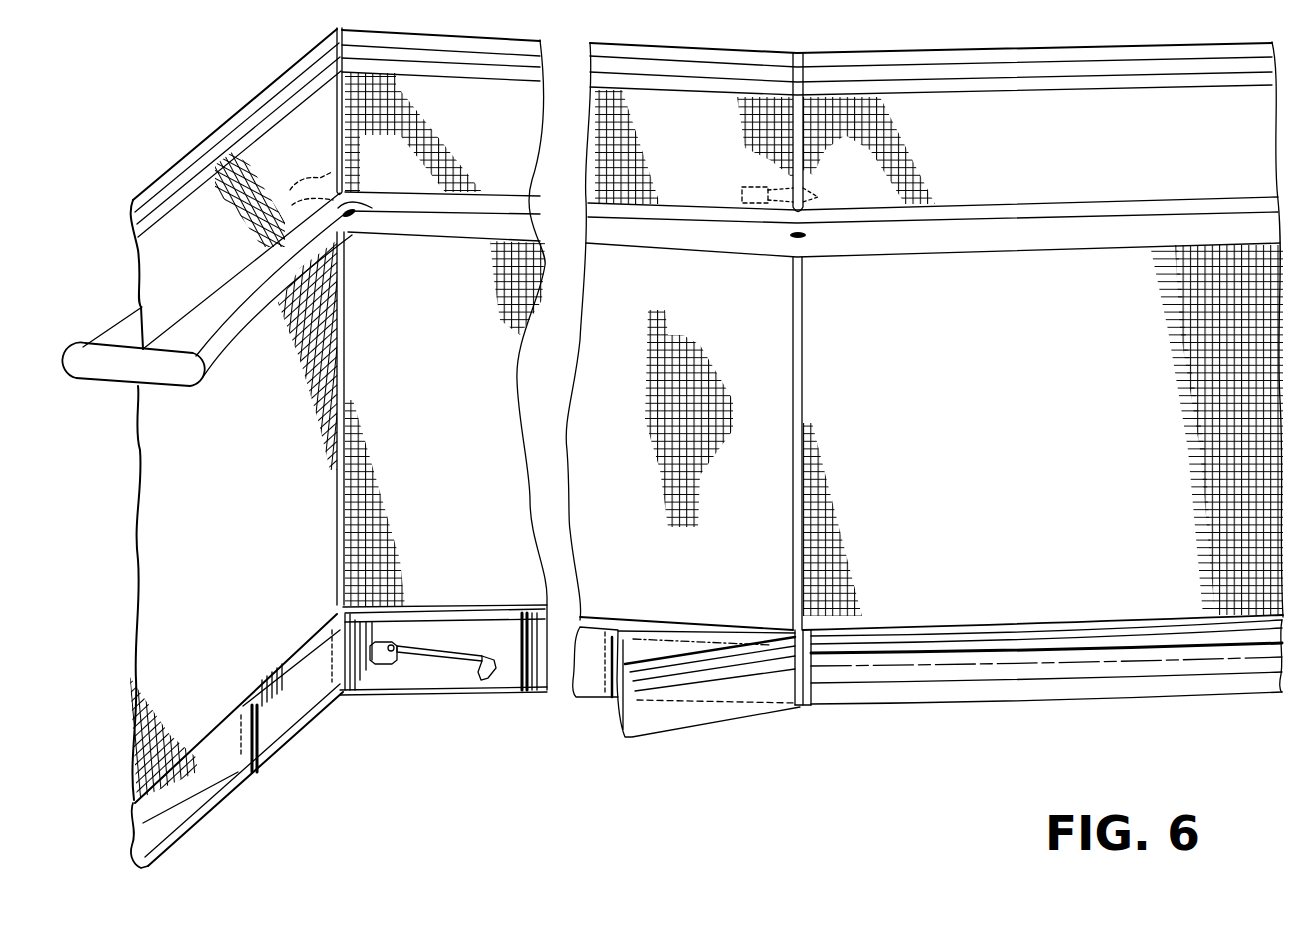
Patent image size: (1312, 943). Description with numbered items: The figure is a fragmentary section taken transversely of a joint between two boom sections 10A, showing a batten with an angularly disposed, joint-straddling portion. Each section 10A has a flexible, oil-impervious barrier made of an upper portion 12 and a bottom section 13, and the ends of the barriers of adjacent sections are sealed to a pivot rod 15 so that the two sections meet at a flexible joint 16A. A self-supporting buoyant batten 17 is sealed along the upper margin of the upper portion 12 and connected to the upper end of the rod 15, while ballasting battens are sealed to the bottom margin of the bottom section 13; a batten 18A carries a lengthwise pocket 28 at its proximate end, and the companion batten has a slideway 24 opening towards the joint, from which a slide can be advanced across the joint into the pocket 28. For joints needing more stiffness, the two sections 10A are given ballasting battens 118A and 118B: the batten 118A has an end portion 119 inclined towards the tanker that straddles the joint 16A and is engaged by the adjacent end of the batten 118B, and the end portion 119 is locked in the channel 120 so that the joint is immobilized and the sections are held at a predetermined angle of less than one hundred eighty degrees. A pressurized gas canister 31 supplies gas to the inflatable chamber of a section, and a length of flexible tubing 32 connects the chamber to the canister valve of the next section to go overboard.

The section 10A is at (587, 42).
The upper portion 12 is at (502, 134).
The bottom section 13 is at (512, 363).
The pivot rod 15 is at (337, 28).
The buoyant batten 17 is at (199, 141).
The pocket 28 is at (354, 212).
The gas canister 31 is at (740, 194).
The flexible tubing 32 is at (813, 197).
The joint 16A is at (340, 693).
The slideway 24 is at (458, 680).
The ballasting batten 118B is at (593, 688).
The channel 120 is at (637, 645).
The end portion 119 is at (688, 718).
The ballasting batten 118A is at (1042, 687).
The batten 18A is at (193, 810).